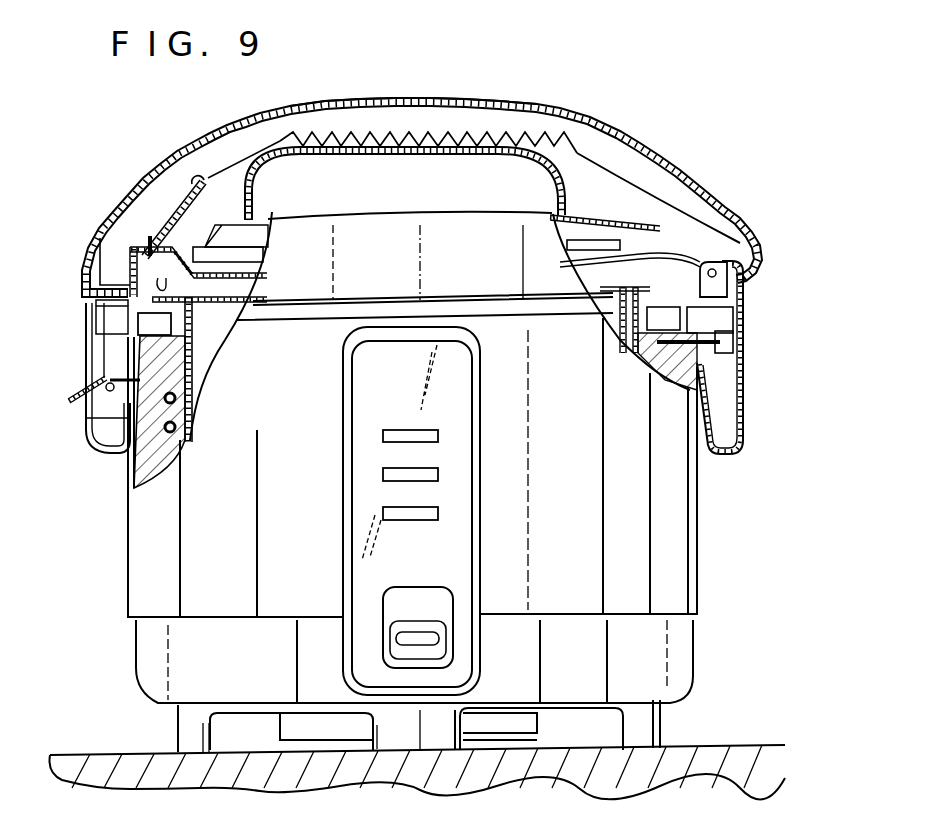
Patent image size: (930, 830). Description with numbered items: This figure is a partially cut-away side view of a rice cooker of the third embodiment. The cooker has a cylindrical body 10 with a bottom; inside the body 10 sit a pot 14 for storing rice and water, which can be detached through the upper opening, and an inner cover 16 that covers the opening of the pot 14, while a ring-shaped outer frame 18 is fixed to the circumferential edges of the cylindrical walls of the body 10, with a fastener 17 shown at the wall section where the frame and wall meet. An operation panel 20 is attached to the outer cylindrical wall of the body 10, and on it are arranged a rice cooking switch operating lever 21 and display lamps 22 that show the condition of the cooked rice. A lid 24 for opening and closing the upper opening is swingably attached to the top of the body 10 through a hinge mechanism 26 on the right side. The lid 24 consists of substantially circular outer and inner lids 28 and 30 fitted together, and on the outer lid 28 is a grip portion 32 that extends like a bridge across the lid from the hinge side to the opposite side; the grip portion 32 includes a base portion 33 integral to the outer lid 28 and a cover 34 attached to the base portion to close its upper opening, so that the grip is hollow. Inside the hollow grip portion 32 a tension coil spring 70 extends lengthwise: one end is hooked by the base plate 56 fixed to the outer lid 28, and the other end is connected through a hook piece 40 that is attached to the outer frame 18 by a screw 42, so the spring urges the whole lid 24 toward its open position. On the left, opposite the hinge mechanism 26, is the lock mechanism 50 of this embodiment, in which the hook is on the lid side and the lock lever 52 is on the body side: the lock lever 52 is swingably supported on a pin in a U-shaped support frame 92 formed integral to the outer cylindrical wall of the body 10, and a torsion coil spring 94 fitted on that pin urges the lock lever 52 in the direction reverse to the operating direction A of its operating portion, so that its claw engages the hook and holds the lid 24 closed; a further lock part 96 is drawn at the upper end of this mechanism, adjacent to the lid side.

The body 10 is at (690, 562).
The pot 14 is at (198, 388).
The inner cover 16 is at (209, 299).
The screw 17 is at (190, 432).
The outer frame 18 is at (156, 341).
The operation panel 20 is at (460, 437).
The rice cooking switch operating lever 21 is at (413, 637).
The display lamps 22 is at (383, 513).
The lid 24 is at (467, 210).
The hinge mechanism 26 is at (743, 307).
The outer lid 28 is at (342, 216).
The inner lid 30 is at (264, 262).
The grip portion 32 is at (607, 108).
The base portion 33 is at (404, 152).
The cover 34 is at (404, 101).
The hook piece 40 is at (745, 285).
The screw 42 is at (707, 367).
The lock mechanism 50 is at (78, 252).
The lock lever 52 is at (97, 328).
The base plate 56 is at (186, 203).
The tension coil spring 70 is at (497, 128).
The U-shaped support frame 92 is at (110, 455).
The torsion coil spring 94 is at (98, 438).
The latch pivot 96 is at (84, 310).
The operating direction A is at (64, 395).